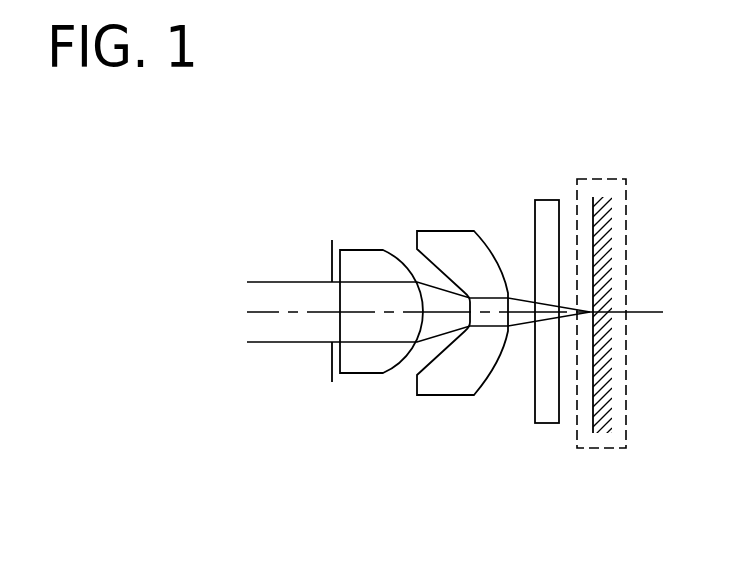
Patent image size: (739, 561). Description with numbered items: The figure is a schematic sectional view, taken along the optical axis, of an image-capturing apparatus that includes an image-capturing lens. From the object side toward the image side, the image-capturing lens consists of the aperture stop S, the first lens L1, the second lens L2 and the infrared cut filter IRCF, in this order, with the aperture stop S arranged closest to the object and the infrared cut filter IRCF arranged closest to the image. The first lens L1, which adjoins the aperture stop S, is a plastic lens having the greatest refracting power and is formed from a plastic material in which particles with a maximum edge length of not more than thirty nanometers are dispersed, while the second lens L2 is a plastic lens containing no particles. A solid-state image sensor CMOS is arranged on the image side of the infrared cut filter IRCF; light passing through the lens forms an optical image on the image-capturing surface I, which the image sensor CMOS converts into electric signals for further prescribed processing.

The aperture stop S is at (332, 240).
The first lens L1 is at (362, 250).
The second lens L2 is at (445, 231).
The infrared cut filter IRCF is at (547, 423).
The image sensor CMOS is at (615, 448).
The image-capturing surface I is at (593, 201).